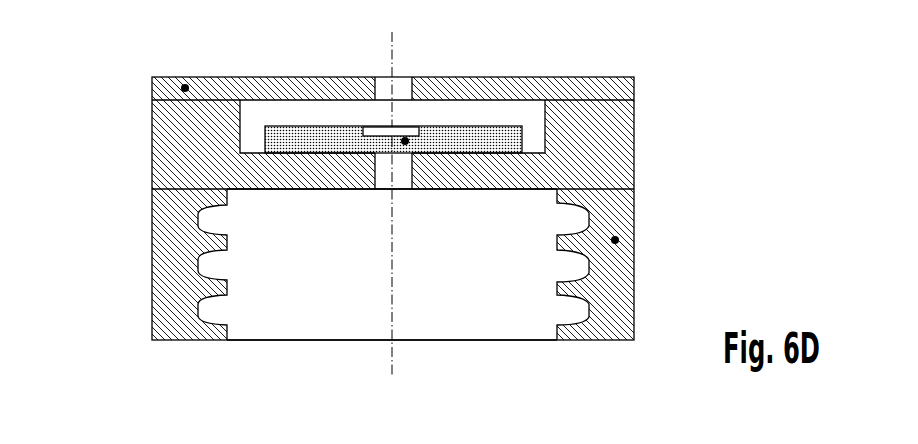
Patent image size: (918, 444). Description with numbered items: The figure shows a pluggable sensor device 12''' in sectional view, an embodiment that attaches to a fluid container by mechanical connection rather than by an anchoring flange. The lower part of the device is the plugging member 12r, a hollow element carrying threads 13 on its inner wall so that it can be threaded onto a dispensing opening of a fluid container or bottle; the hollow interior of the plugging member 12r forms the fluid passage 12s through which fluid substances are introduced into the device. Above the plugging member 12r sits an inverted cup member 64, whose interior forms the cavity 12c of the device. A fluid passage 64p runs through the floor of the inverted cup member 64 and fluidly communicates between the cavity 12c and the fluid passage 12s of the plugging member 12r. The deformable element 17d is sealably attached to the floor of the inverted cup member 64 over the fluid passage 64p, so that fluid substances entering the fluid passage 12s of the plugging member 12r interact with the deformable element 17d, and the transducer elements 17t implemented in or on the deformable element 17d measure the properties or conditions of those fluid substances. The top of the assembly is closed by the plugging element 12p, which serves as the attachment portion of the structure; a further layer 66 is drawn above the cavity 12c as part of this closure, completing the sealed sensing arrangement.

The pluggable sensor device 12''' is at (440, 208).
The cap layer 66 is at (190, 83).
The inverted cup member 64 is at (188, 142).
The cavity 12c is at (328, 112).
The plugging element 12p is at (385, 85).
The fluid passage 64p is at (402, 178).
The transducer element 17t is at (400, 127).
The deformable element 17d is at (409, 136).
The threads 13 is at (210, 293).
The plugging member 12r is at (626, 236).
The fluid passage 12s is at (453, 318).